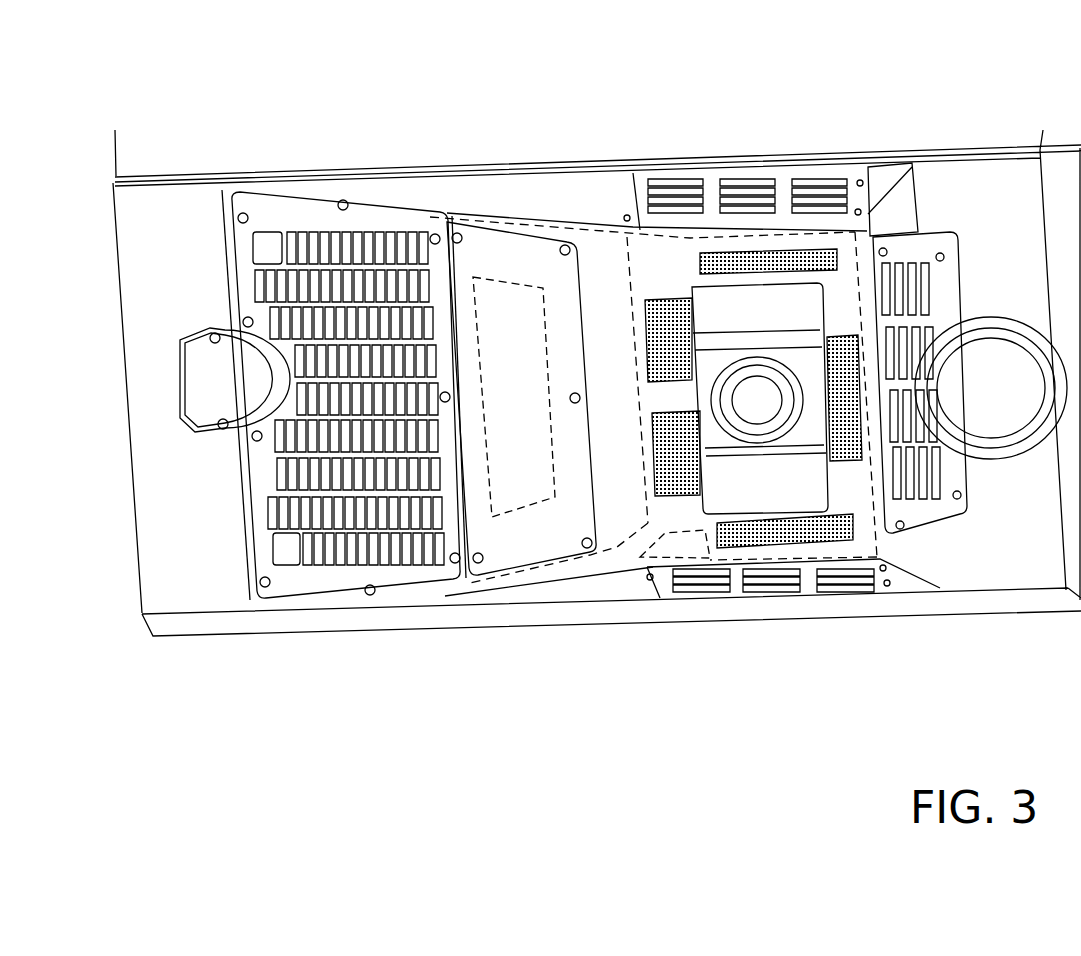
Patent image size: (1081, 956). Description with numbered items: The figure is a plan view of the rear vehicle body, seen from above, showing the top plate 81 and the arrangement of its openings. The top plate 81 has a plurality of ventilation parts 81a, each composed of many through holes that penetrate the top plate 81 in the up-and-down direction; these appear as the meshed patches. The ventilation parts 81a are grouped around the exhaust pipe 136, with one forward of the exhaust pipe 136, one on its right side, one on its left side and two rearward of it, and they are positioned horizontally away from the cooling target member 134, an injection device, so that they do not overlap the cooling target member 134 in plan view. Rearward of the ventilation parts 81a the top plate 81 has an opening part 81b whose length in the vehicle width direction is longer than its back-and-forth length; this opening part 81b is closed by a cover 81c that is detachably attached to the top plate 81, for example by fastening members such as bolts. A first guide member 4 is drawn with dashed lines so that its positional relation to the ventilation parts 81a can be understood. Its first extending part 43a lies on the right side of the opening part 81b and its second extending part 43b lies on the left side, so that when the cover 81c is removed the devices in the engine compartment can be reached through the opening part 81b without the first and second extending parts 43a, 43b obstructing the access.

The first guide member 4 is at (630, 217).
The first extending part 43a is at (593, 562).
The second extending part 43b is at (567, 217).
The top plate 81 is at (893, 220).
The ventilation part 81a is at (847, 340).
The opening part 81b is at (515, 280).
The cover 81c is at (533, 537).
The cooling target member 134 is at (667, 547).
The exhaust pipe 136 is at (763, 427).